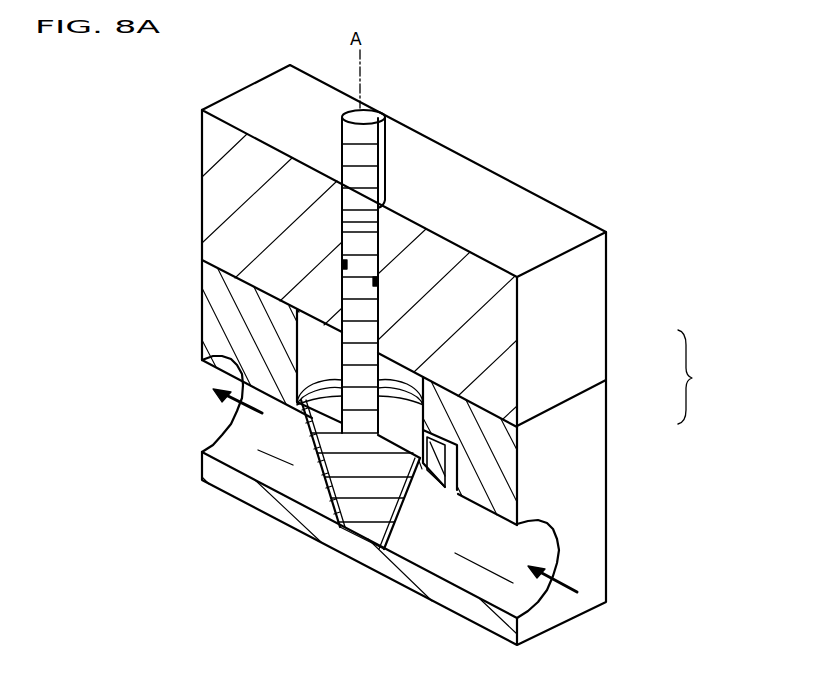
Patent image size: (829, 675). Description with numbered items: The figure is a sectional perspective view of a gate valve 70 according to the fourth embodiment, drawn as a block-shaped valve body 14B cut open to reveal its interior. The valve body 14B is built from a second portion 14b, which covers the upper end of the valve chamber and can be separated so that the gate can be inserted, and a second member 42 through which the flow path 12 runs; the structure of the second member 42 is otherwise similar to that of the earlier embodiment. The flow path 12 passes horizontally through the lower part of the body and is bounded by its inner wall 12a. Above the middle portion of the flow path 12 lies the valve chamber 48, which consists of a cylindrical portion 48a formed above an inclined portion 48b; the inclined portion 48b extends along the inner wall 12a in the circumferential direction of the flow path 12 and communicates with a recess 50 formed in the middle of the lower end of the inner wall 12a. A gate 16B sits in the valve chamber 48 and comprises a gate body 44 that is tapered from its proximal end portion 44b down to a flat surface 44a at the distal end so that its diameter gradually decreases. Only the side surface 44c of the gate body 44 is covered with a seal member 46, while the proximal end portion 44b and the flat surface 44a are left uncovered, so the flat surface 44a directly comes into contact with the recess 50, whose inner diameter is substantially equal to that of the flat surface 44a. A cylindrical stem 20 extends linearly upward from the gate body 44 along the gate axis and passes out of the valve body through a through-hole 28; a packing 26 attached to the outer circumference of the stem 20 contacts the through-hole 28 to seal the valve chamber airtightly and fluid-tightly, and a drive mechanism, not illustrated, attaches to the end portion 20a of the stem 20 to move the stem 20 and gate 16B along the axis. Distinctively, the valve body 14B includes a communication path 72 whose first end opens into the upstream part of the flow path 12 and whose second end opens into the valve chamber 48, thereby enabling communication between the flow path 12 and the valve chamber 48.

The gate valve 70 is at (541, 90).
The flow path 12 is at (550, 556).
The inner wall of the flow path 12a is at (545, 538).
The second portion 14b is at (590, 351).
The valve body 14B is at (702, 377).
The second member 42 is at (590, 416).
The gate 16B is at (296, 435).
The stem 20 is at (355, 137).
The end portion of the stem 20a is at (372, 117).
The packing 26 is at (380, 282).
The through-hole 28 is at (352, 221).
The gate body 44 is at (330, 482).
The flat surface 44a is at (352, 541).
The proximal end portion 44b is at (425, 378).
The side surface 44c is at (303, 500).
The seal member 46 is at (333, 497).
The valve chamber 48 is at (395, 373).
The cylindrical portion 48a is at (312, 338).
The inclined portion 48b is at (306, 378).
The recess 50 is at (392, 527).
The communication path 72 is at (458, 478).